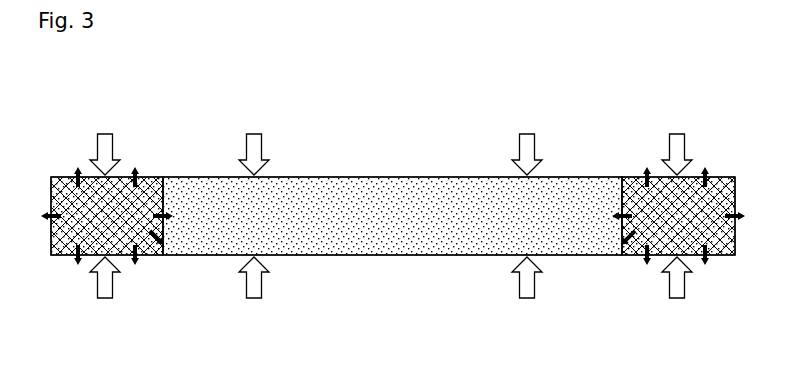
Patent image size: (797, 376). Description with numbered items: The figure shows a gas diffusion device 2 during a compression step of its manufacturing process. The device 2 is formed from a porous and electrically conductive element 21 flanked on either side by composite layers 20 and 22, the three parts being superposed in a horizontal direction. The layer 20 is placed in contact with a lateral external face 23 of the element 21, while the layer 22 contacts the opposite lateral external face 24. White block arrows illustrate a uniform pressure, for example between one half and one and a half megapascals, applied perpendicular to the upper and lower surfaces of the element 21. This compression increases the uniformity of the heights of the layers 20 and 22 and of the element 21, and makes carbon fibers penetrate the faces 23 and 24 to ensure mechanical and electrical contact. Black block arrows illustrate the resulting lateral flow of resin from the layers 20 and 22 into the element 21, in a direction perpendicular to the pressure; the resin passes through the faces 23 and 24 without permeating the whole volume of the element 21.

The gas diffusion device 2 is at (573, 143).
The composite layer 20 is at (94, 227).
The porous and electrically conductive element 21 is at (378, 227).
The composite layer 22 is at (665, 227).
The lateral external face 23 is at (152, 256).
The opposite lateral external face 24 is at (634, 256).